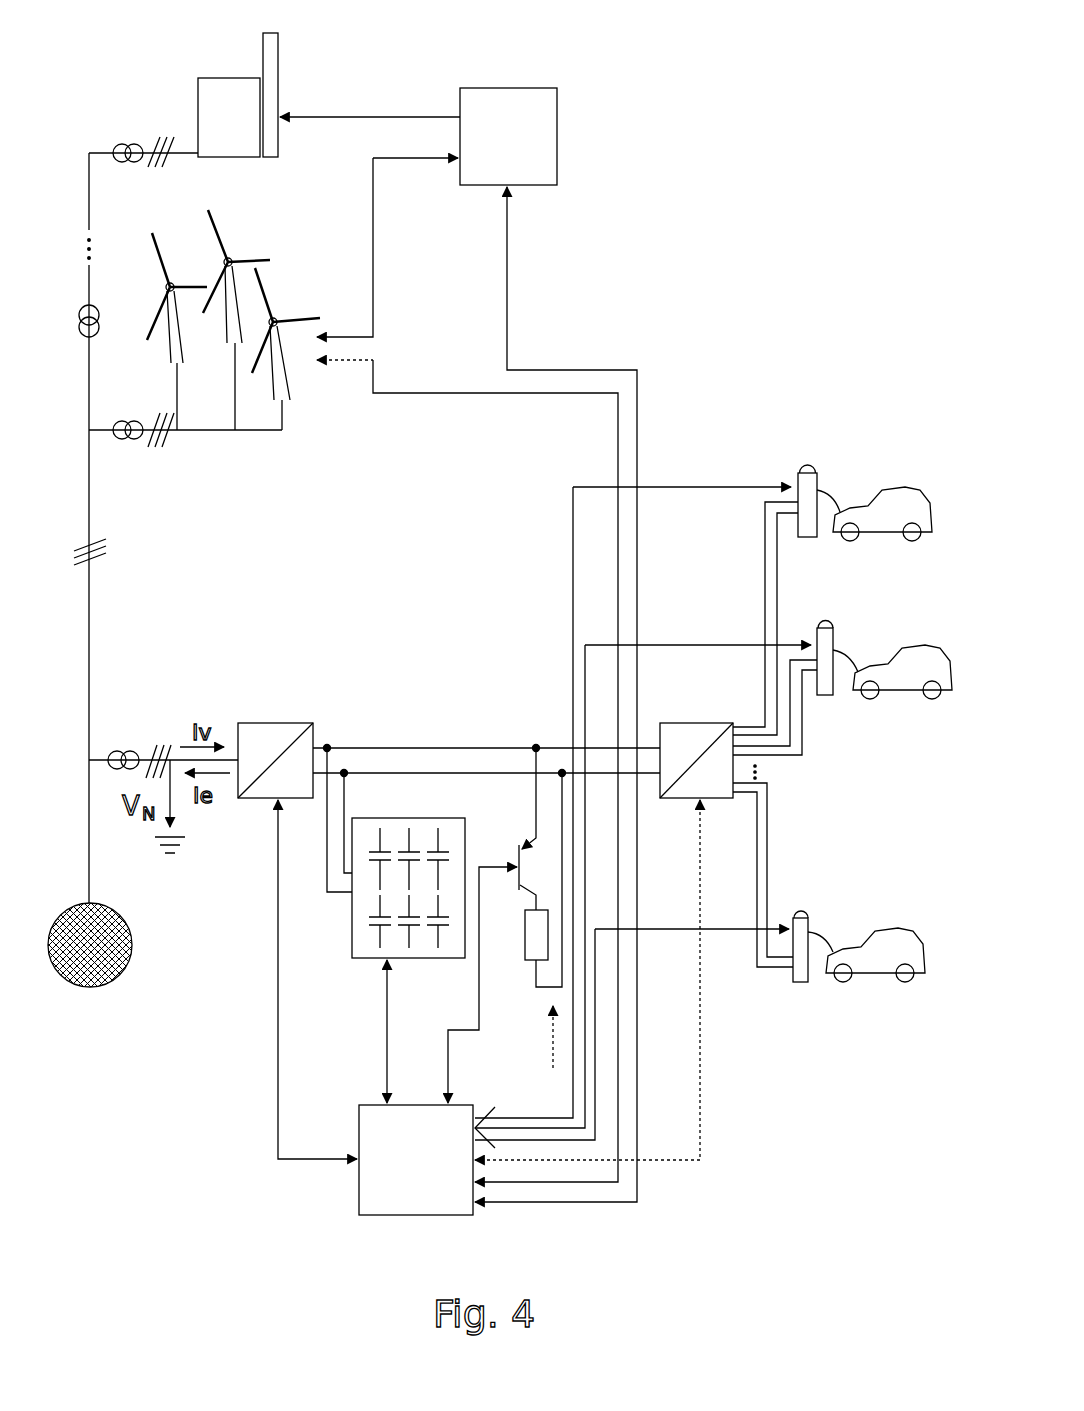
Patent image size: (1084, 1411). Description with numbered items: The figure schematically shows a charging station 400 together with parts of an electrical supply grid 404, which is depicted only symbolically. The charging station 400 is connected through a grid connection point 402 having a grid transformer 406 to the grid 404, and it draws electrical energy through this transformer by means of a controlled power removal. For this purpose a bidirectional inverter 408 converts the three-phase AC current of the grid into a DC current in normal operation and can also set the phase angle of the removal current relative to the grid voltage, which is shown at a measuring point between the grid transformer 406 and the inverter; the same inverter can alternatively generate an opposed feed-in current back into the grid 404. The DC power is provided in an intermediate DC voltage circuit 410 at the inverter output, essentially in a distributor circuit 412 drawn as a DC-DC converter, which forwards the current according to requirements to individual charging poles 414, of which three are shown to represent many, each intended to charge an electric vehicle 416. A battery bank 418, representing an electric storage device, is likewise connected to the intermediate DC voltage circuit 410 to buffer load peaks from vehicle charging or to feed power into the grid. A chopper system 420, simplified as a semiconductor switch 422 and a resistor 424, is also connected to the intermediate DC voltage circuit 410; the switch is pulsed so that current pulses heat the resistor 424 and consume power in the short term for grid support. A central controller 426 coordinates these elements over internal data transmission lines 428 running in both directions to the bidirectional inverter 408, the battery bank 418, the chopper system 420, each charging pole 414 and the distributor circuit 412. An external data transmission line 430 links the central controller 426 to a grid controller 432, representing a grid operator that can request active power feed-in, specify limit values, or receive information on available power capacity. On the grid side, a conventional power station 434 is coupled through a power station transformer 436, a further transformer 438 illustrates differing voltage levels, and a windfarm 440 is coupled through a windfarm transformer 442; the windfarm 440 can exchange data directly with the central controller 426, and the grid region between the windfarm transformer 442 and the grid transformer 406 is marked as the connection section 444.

The charging station 400 is at (687, 1207).
The grid connection point 402 is at (100, 758).
The electrical supply grid 404 is at (131, 942).
The grid transformer 406 is at (130, 750).
The bidirectional inverter 408 is at (290, 722).
The intermediate DC voltage circuit 410 is at (320, 752).
The distributor circuit 412 is at (713, 721).
The charging pole 414 is at (826, 470).
The electric vehicle 416 is at (896, 490).
The battery bank 418 is at (372, 947).
The chopper system 420 is at (555, 1054).
The semiconductor switch 422 is at (531, 846).
The resistor 424 is at (527, 945).
The central controller 426 is at (367, 1190).
The internal data transmission line 428 is at (705, 437).
The external data transmission line 430 is at (350, 118).
The grid controller 432 is at (557, 137).
The power station 434 is at (288, 66).
The power station transformer 436 is at (126, 143).
The further transformer 438 is at (103, 320).
The windfarm 440 is at (296, 414).
The windfarm transformer 442 is at (128, 440).
The connection section 444 is at (90, 517).